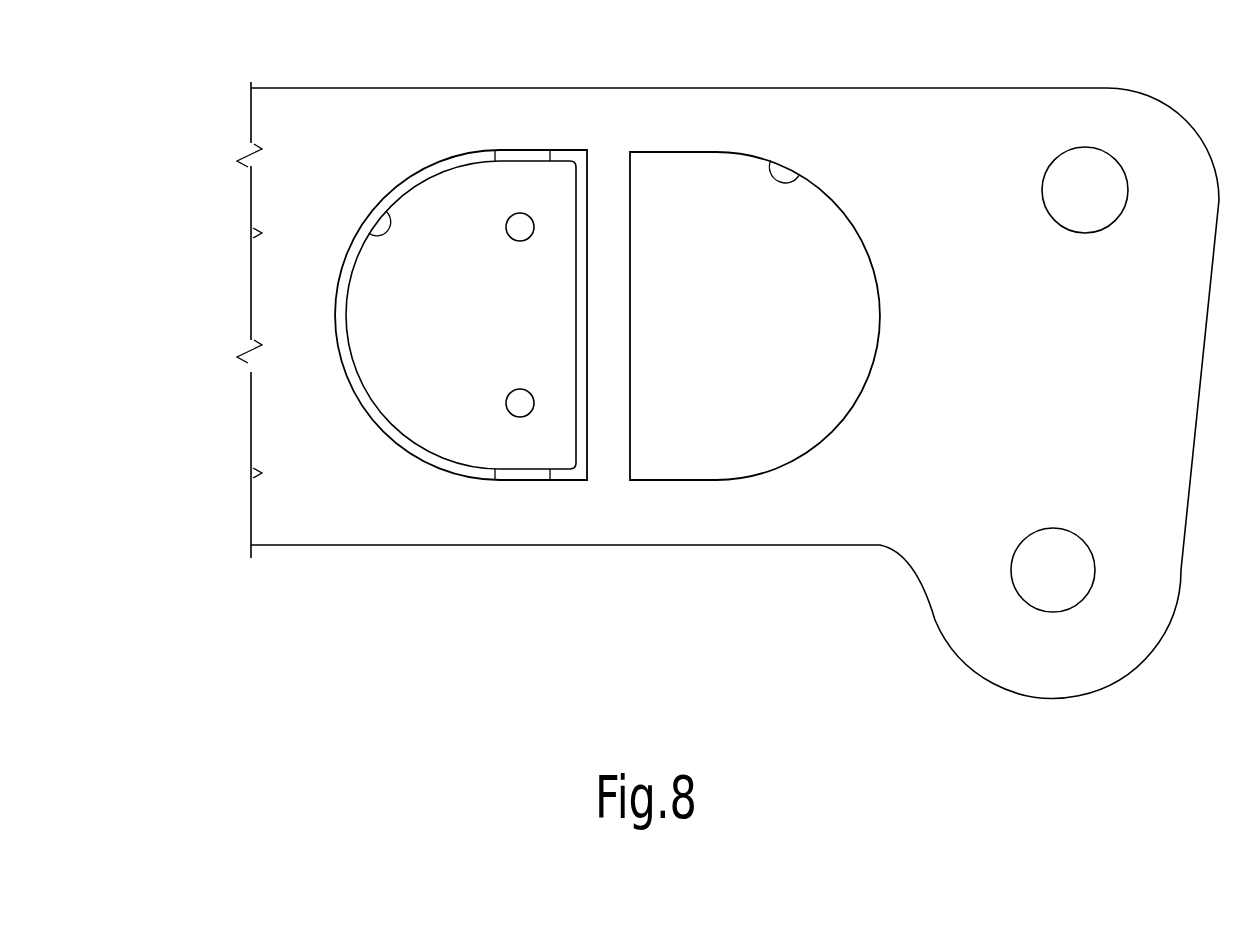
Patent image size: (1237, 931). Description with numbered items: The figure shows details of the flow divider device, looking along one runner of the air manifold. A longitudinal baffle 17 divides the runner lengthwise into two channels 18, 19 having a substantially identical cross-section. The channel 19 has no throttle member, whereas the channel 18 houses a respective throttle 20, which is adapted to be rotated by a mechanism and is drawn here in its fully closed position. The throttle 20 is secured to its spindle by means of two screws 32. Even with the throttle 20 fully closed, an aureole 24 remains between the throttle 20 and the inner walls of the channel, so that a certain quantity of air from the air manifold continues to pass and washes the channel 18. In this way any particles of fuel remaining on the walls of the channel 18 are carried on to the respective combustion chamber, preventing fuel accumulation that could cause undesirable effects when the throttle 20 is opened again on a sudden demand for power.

The longitudinal baffle 17 is at (606, 216).
The channel 18 is at (385, 230).
The channel 19 is at (785, 187).
The throttle 20 is at (413, 412).
The aureole 24 is at (333, 304).
The screws 32 is at (516, 220).